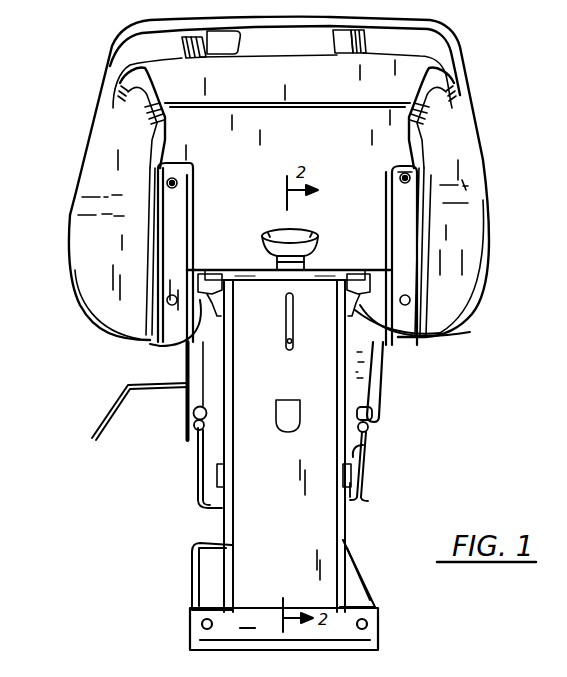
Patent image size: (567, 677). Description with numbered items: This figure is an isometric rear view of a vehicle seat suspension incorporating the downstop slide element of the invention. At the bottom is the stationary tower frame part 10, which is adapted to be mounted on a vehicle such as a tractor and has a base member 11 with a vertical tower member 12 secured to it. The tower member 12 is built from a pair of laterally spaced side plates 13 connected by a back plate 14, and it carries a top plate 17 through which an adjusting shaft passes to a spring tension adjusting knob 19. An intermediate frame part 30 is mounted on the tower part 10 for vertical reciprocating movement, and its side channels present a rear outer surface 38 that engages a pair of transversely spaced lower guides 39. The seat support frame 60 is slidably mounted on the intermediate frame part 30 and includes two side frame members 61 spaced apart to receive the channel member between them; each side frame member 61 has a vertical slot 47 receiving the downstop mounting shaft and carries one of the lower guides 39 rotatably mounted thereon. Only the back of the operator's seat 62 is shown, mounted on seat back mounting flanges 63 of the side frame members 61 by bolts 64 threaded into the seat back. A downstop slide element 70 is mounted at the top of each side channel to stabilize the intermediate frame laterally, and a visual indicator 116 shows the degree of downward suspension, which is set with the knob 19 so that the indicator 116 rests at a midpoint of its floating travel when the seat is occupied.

The stationary tower frame part 10 is at (338, 518).
The base member 11 is at (205, 590).
The vertical tower member 12 is at (215, 560).
The side plates 13 is at (222, 516).
The back plate 14 is at (322, 578).
The top plate 17 is at (243, 272).
The spring tension adjusting knob 19 is at (300, 238).
The intermediate frame part 30 is at (207, 458).
The rear outer surface 38 is at (190, 395).
The lower guides 39 is at (195, 437).
The vertical slot 47 is at (378, 183).
The seat support frame 60 is at (384, 358).
The side frame members 61 is at (197, 175).
The seat back 62 is at (468, 283).
The seat back mounting flanges 63 is at (165, 178).
The bolts 64 is at (405, 180).
The downstop slide element 70 is at (208, 272).
The visual indicator 116 is at (205, 318).